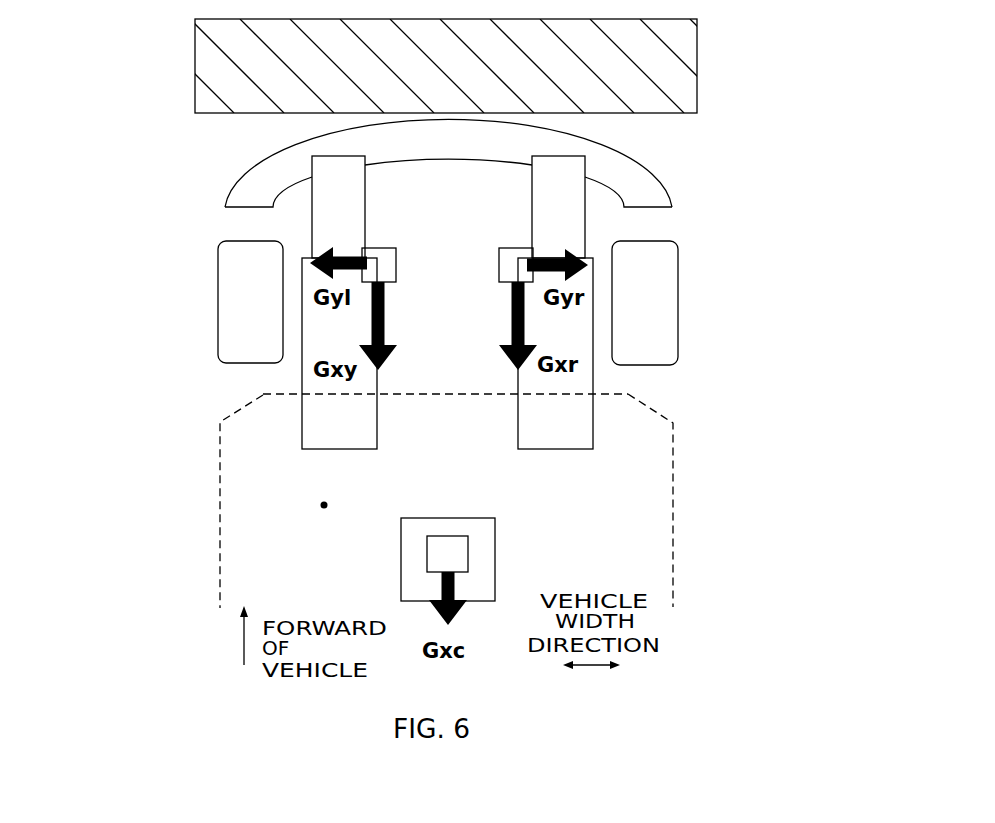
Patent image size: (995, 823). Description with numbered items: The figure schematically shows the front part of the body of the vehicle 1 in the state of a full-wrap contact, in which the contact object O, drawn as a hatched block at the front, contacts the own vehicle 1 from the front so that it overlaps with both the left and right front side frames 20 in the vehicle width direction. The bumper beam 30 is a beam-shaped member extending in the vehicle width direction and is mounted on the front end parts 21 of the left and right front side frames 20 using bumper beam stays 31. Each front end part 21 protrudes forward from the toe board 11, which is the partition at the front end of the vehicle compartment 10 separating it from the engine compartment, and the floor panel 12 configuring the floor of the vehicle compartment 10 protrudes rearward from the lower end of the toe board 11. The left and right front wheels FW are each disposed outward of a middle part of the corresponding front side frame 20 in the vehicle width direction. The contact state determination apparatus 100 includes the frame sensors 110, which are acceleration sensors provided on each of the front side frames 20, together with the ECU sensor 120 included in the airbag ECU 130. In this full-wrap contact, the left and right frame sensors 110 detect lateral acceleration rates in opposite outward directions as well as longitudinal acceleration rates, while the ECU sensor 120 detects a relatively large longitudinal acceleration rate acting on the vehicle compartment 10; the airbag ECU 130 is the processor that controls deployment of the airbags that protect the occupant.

The vehicle 1 is at (217, 142).
The contact object O is at (697, 58).
The bumper beam 30 is at (232, 178).
The bumper beam stay 31 is at (312, 225).
The front end part 21 is at (303, 259).
The front side frame 20 is at (242, 302).
The front wheel FW is at (218, 299).
The frame sensor 110 is at (535, 248).
The toe board 11 is at (270, 395).
The vehicle compartment 10 is at (212, 455).
The floor panel 12 is at (324, 505).
The contact state determination apparatus 100 is at (304, 554).
The ECU sensor 120 is at (430, 543).
The airbag ECU 130 is at (402, 575).